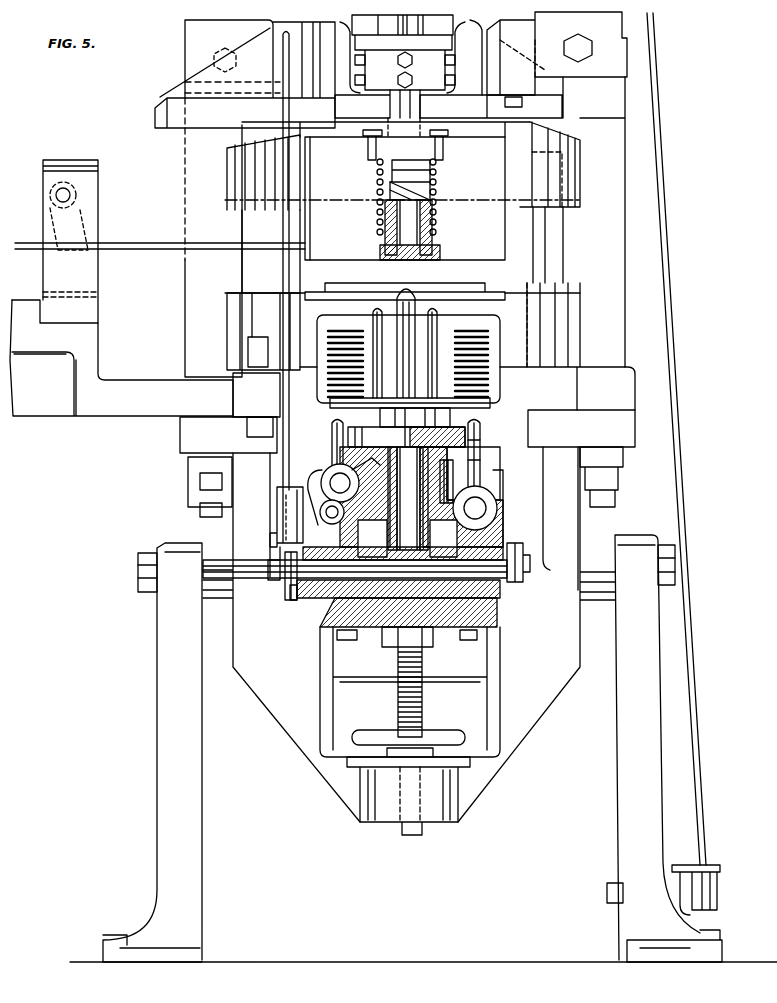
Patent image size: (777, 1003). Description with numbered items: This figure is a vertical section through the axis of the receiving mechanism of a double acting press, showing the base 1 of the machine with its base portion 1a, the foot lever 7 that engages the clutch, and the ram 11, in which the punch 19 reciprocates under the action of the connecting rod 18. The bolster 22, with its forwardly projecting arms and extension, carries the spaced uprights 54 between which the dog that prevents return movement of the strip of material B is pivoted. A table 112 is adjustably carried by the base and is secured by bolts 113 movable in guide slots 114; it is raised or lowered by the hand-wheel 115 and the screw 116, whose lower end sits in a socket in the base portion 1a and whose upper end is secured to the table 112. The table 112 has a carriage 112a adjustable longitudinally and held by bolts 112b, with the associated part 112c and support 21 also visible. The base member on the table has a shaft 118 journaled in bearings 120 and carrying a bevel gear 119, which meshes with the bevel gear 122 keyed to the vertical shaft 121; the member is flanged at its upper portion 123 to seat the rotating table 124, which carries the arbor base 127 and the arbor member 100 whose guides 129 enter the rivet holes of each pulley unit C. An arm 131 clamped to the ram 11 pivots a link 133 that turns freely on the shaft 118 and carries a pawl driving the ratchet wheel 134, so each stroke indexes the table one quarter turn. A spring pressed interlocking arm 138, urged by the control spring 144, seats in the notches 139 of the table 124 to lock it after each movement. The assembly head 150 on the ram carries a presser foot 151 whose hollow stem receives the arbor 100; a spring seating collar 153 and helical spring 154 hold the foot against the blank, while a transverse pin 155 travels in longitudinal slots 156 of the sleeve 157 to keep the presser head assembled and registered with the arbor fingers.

The base 1 is at (192, 760).
The base portion 1a is at (380, 826).
The foot lever 7 is at (712, 866).
The ram 11 is at (311, 34).
The connecting rod 18 is at (396, 18).
The punch 19 is at (398, 76).
The support plate 21 is at (407, 431).
The bolster 22 is at (124, 414).
The spaced uprights 54 is at (98, 200).
The strip of material B is at (162, 246).
The pulley unit C is at (473, 286).
The arbor member 100 is at (408, 348).
The table 112 is at (347, 642).
The carriage 112a is at (323, 629).
The bolts 112b is at (410, 674).
The housing nut 112c is at (470, 641).
The bolts 113 is at (497, 509).
The guide slots 114 is at (478, 448).
The hand-wheel 115 is at (440, 735).
The screw 116 is at (423, 698).
The shaft 118 is at (523, 566).
The bevel gear 119 is at (448, 550).
The bearings 120 is at (309, 606).
The shaft 121 is at (454, 487).
The bevel gear 122 is at (387, 546).
The upper portion 123 is at (481, 462).
The table 124 is at (481, 434).
The arbor base 127 is at (452, 411).
The guides 129 is at (437, 314).
The arm 131 is at (292, 274).
The link 133 is at (285, 593).
The ratchet wheel 134 is at (300, 593).
The interlocking arm 138 is at (333, 443).
The notches 139 is at (407, 439).
The control spring 144 is at (334, 476).
The assembly head 150 is at (445, 150).
The presser foot 151 is at (440, 252).
The spring seating collar 153 is at (434, 234).
The helical spring 154 is at (433, 196).
The transverse pin 155 is at (378, 198).
The longitudinal slots 156 is at (437, 184).
The sleeve 157 is at (386, 221).